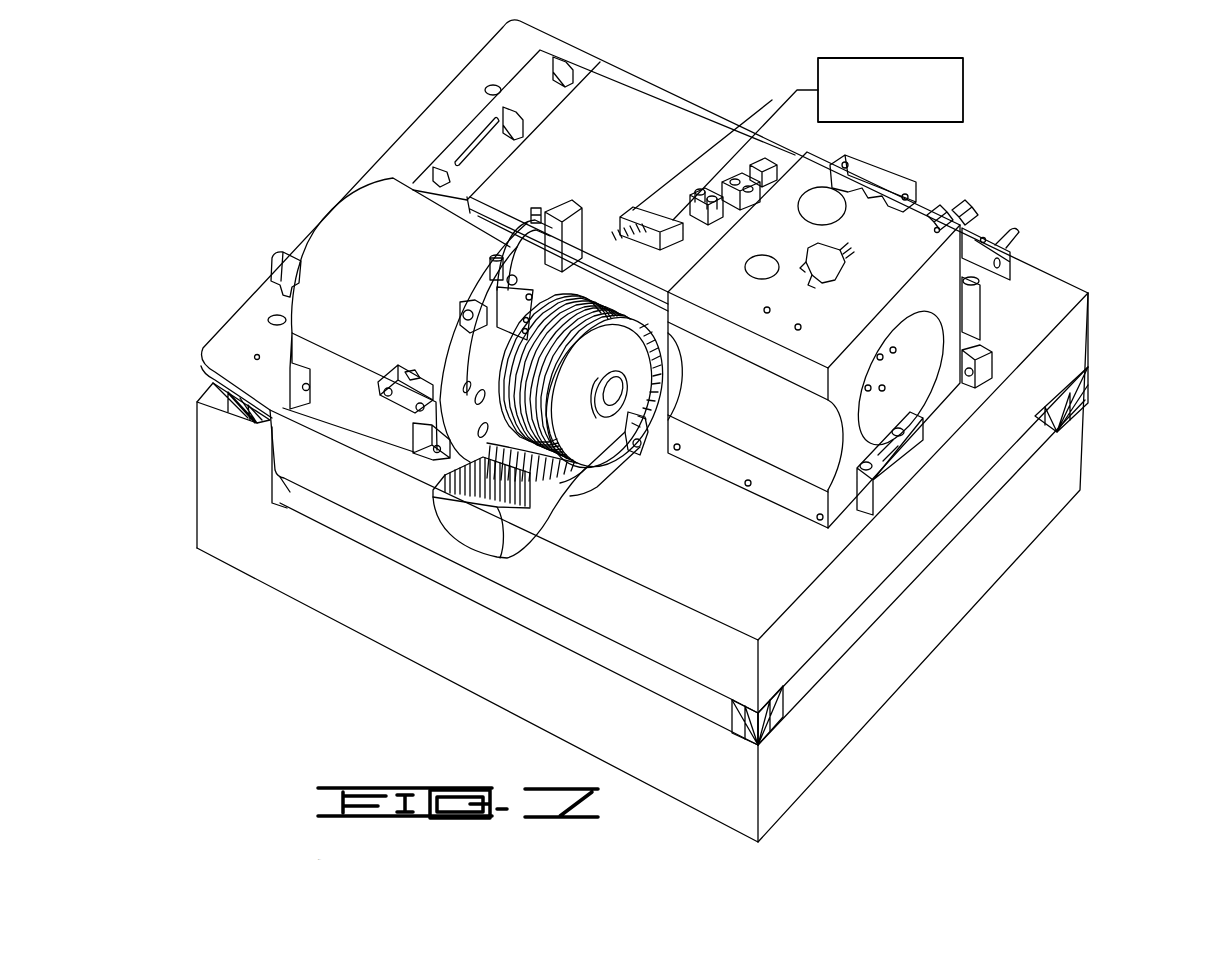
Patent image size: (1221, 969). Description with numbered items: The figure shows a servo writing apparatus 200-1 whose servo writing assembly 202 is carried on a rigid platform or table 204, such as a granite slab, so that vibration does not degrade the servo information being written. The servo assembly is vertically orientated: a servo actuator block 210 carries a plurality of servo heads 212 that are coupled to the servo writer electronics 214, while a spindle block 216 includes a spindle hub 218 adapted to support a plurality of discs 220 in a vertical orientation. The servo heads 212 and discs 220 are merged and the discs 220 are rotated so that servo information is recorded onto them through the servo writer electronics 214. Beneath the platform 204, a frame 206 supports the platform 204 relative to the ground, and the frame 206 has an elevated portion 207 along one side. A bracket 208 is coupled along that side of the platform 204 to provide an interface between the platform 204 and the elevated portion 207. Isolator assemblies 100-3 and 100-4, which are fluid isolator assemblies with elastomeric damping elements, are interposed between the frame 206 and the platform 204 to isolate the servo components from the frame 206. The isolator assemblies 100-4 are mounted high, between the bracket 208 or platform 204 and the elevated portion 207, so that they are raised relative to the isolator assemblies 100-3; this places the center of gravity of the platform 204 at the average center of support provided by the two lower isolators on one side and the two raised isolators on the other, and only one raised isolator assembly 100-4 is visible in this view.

The servo writing apparatus 200-1 is at (1056, 150).
The servo writing assembly 202 is at (505, 657).
The rigid platform or table 204 is at (447, 103).
The frame 206 is at (1082, 472).
The elevated portion 207 is at (197, 467).
The bracket 208 is at (305, 488).
The servo actuator block 210 is at (857, 175).
The servo heads 212 is at (641, 243).
The servo writer electronics 214 is at (968, 83).
The spindle block 216 is at (357, 237).
The spindle hub 218 is at (612, 416).
The discs 220 is at (640, 400).
The isolator assemblies 100-3 is at (1078, 395).
The raised isolator assemblies 100-4 is at (213, 393).